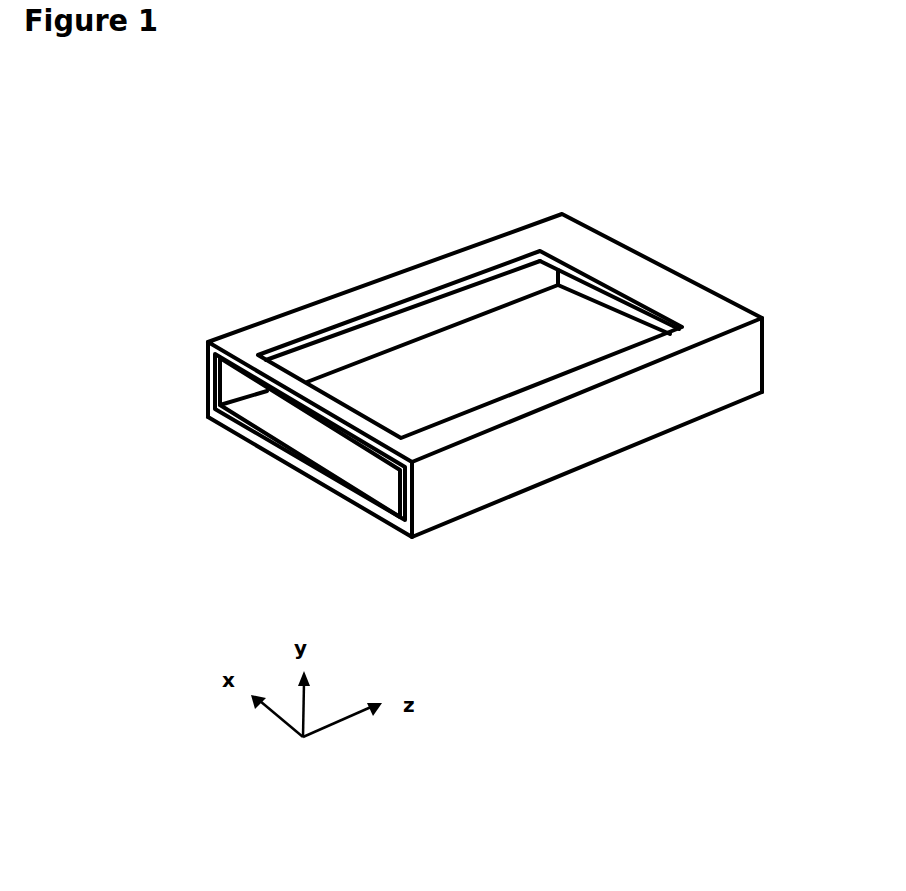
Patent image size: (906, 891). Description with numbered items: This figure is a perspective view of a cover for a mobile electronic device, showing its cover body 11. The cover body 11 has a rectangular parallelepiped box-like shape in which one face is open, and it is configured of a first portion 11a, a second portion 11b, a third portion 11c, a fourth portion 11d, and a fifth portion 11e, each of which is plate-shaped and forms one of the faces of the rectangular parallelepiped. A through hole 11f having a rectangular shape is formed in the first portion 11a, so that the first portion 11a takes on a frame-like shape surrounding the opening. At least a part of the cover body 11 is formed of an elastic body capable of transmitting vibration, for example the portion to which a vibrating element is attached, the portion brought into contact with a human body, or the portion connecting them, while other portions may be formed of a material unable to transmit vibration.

The cover body 11 is at (559, 232).
The first portion 11a is at (715, 316).
The second portion 11b is at (602, 436).
The third portion 11c is at (363, 342).
The fourth portion 11d is at (613, 307).
The fifth portion 11e is at (483, 363).
The through hole 11f is at (308, 336).